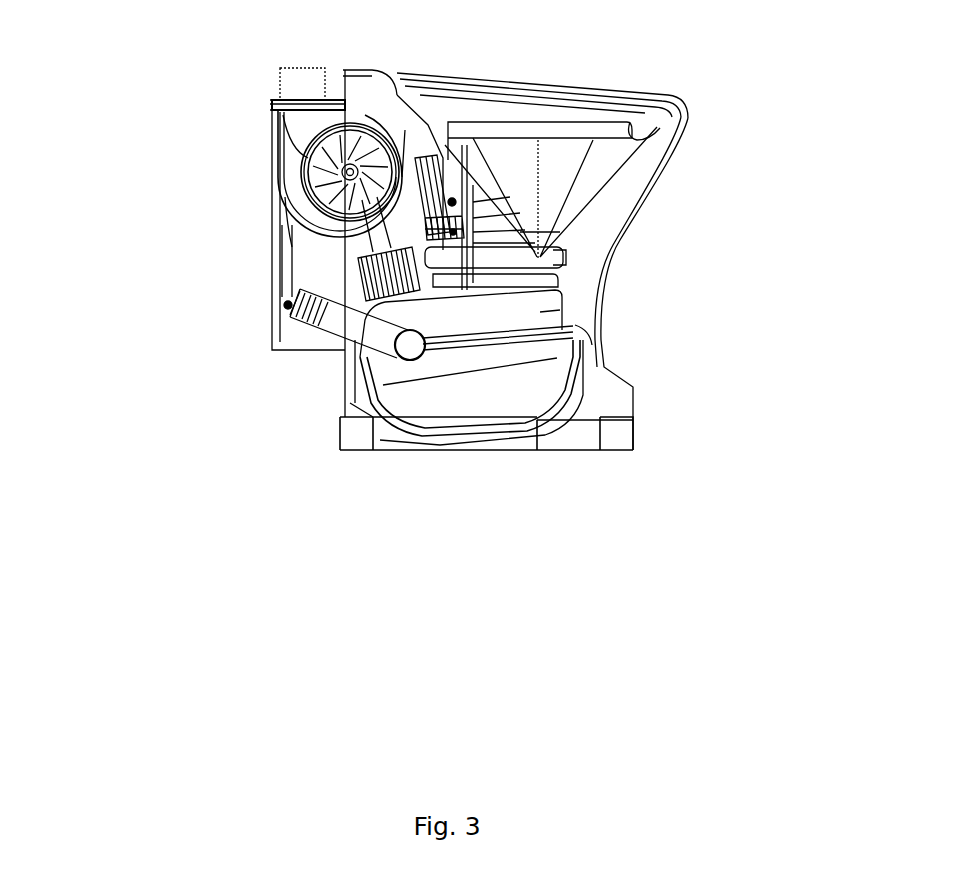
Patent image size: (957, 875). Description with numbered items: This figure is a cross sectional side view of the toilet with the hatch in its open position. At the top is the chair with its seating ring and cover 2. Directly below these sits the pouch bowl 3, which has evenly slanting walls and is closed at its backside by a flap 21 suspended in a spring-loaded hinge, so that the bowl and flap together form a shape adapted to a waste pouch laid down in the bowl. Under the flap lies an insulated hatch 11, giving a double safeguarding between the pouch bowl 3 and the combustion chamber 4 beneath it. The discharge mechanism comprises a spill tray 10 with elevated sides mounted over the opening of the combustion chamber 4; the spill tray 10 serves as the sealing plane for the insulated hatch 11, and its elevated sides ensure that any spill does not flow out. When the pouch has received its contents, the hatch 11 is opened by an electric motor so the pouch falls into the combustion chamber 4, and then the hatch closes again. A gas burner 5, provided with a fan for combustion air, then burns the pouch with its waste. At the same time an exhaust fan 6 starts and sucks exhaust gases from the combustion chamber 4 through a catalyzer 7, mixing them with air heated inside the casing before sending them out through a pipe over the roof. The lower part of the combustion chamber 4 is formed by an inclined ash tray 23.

The seating ring and cover 2 is at (628, 82).
The pouch bowl 3 is at (583, 177).
The combustion chamber 4 is at (563, 315).
The gas burner 5 is at (300, 318).
The exhaust fan 6 is at (297, 153).
The catalyzer 7 is at (358, 268).
The spill tray 10 is at (570, 260).
The insulated hatch 11 is at (410, 185).
The flap 21 is at (520, 232).
The inclined ash tray 23 is at (537, 377).